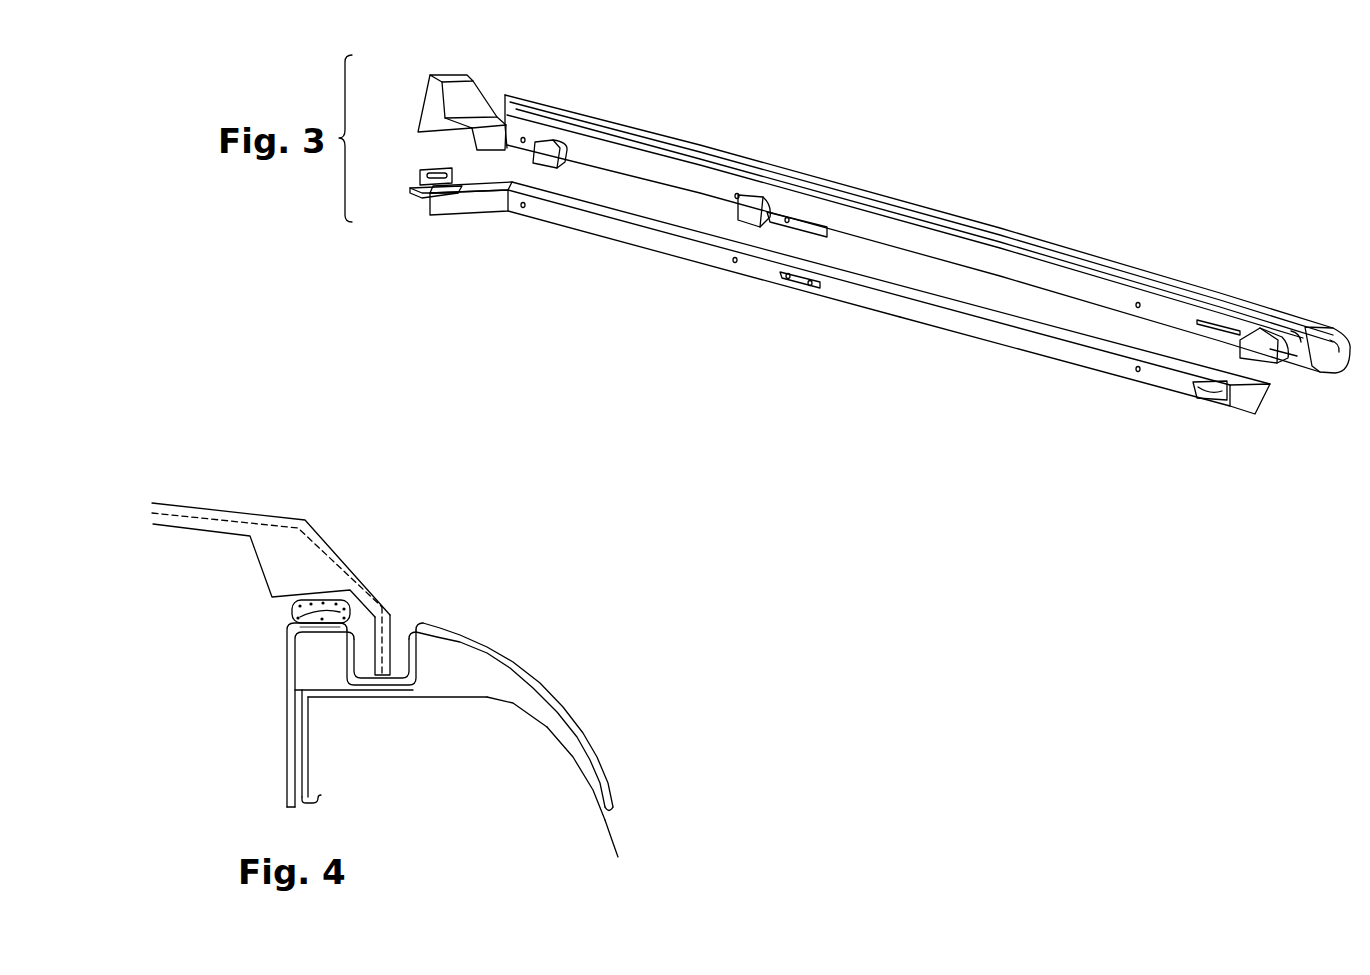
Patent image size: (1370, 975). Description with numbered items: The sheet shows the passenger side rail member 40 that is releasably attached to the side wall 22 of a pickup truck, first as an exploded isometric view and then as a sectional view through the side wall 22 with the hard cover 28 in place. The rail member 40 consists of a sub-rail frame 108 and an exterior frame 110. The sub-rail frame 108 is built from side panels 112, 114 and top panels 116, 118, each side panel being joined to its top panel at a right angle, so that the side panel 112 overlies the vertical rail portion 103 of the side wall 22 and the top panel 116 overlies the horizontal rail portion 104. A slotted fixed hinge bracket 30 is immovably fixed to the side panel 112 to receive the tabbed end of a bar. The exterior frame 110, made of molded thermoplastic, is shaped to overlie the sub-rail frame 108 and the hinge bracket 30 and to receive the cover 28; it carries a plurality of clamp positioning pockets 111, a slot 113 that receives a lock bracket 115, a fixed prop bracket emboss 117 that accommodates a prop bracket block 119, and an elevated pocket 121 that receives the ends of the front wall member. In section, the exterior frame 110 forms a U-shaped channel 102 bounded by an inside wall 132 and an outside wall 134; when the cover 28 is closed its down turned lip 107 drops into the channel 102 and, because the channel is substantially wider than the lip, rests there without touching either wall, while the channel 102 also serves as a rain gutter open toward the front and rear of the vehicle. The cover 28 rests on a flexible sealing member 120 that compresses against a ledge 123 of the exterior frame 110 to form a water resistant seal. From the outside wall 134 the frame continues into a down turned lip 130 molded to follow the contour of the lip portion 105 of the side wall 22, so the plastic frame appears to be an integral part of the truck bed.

In FIG. 3, the rail member 40 is at (770, 123).
In FIG. 3, the exterior frame 110 is at (1050, 246).
In FIG. 4, the exterior frame 110 is at (527, 663).
In FIG. 3, the ledge 123 is at (942, 230).
In FIG. 4, the ledge 123 is at (312, 623).
In FIG. 3, the channel 102 is at (1317, 338).
In FIG. 4, the channel 102 is at (403, 660).
In FIG. 3, the slot 113 is at (1223, 327).
In FIG. 3, the clamp positioning pockets 111 is at (552, 146).
In FIG. 3, the fixed prop bracket emboss 117 is at (810, 226).
In FIG. 3, the elevated pocket 121 is at (463, 93).
In FIG. 3, the top panel 118 is at (482, 186).
In FIG. 3, the slotted fixed hinge bracket 30 is at (423, 173).
In FIG. 3, the side panel 114 is at (482, 205).
In FIG. 3, the side panel 112 is at (703, 256).
In FIG. 4, the side panel 112 is at (296, 733).
In FIG. 3, the top panel 116 is at (878, 286).
In FIG. 4, the top panel 116 is at (418, 697).
In FIG. 3, the sub-rail frame 108 is at (975, 338).
In FIG. 3, the prop bracket block 119 is at (793, 279).
In FIG. 3, the lock bracket 115 is at (1203, 383).
In FIG. 4, the hard cover 28 is at (229, 512).
In FIG. 4, the down turned lip 107 is at (367, 612).
In FIG. 4, the sealing member 120 is at (292, 610).
In FIG. 4, the inside wall 132 is at (346, 657).
In FIG. 4, the outside wall 134 is at (425, 668).
In FIG. 4, the horizontal rail portion 104 is at (488, 700).
In FIG. 4, the down turned lip 130 is at (600, 757).
In FIG. 4, the vertical rail portion 103 is at (308, 773).
In FIG. 4, the side wall 22 is at (318, 798).
In FIG. 4, the lip portion 105 is at (603, 820).